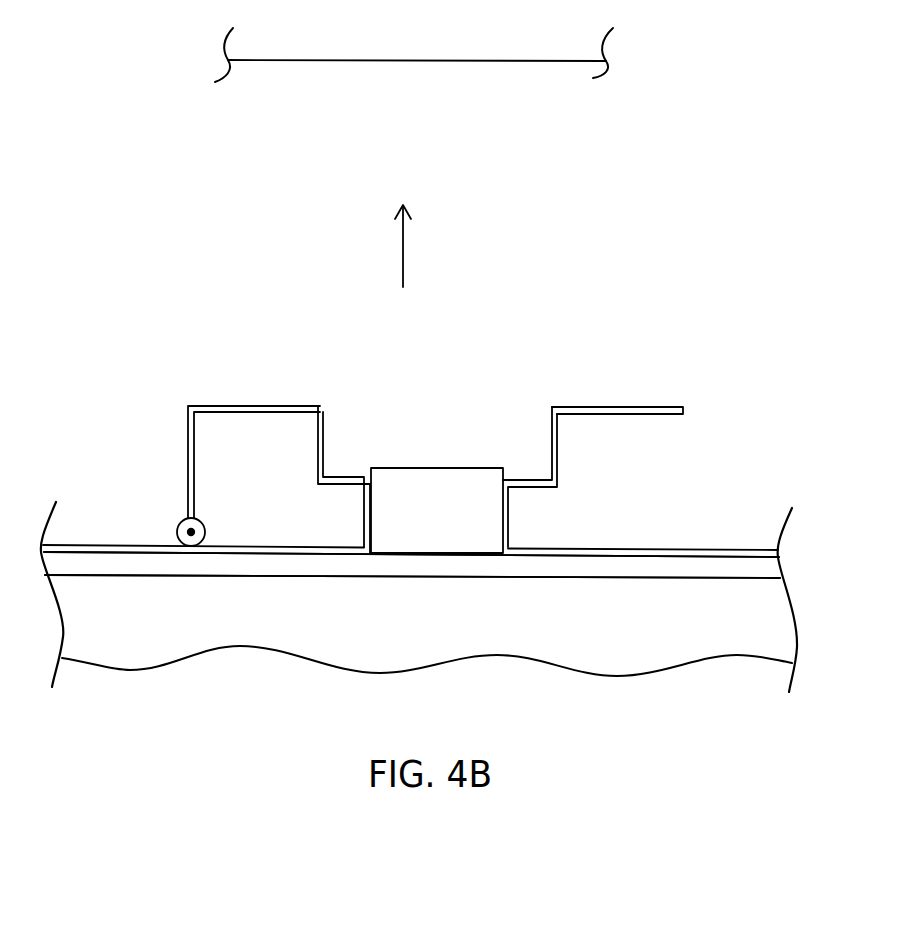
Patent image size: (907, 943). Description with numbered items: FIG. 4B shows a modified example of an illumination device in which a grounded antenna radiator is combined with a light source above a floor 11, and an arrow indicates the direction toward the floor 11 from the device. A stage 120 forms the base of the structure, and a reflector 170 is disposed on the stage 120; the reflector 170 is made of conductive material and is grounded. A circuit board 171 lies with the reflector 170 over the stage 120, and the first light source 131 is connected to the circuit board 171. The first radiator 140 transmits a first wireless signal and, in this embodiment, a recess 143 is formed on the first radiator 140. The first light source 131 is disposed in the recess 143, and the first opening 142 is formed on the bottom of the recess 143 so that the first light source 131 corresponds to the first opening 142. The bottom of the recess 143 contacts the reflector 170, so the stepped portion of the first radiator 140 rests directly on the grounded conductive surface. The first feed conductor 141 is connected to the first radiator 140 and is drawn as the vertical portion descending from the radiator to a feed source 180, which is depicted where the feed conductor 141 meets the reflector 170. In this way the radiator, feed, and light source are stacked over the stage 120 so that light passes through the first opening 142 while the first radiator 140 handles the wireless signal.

The floor 11 is at (550, 61).
The stage 120 is at (773, 625).
The first light source 131 is at (435, 507).
The first radiator 140 is at (616, 407).
The first feed conductor 141 is at (192, 462).
The first opening 142 is at (507, 478).
The recess 143 is at (348, 440).
The reflector 170 is at (743, 548).
The circuit board 171 is at (763, 572).
The feed source 180 is at (177, 525).